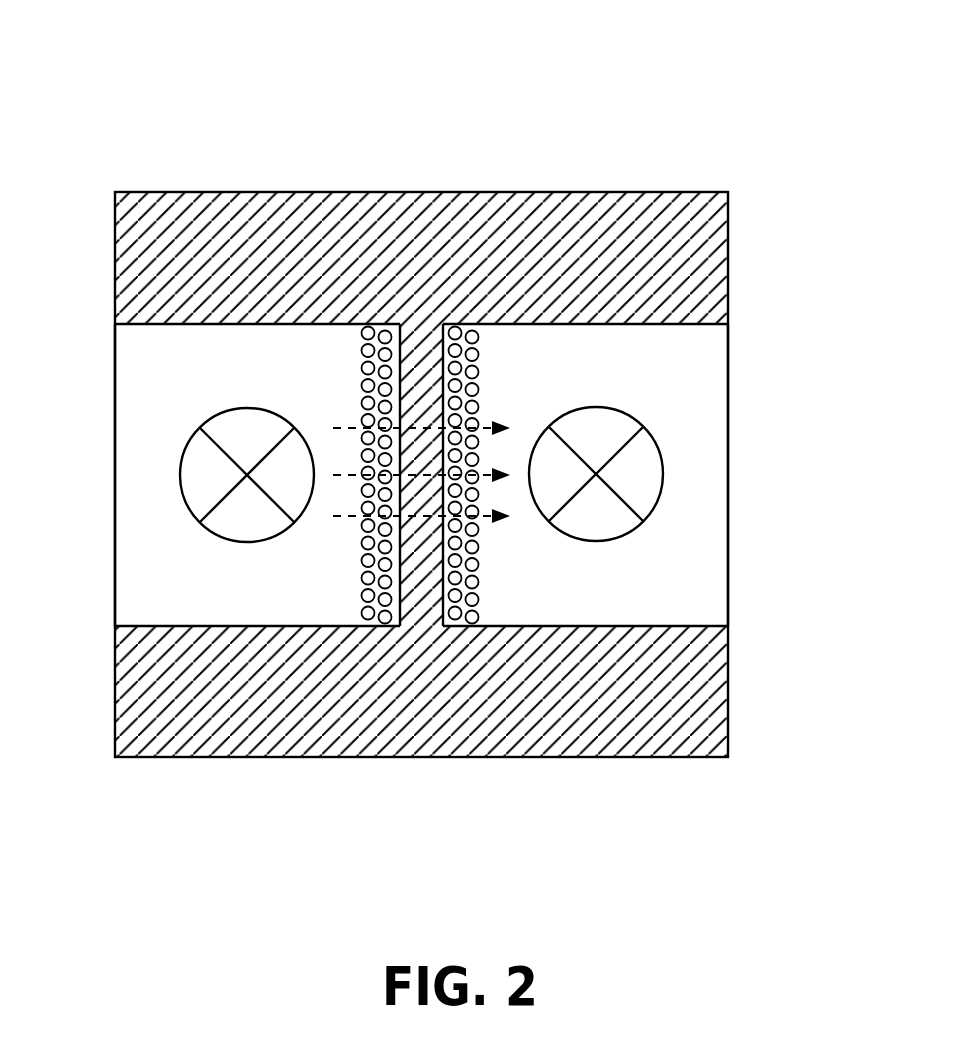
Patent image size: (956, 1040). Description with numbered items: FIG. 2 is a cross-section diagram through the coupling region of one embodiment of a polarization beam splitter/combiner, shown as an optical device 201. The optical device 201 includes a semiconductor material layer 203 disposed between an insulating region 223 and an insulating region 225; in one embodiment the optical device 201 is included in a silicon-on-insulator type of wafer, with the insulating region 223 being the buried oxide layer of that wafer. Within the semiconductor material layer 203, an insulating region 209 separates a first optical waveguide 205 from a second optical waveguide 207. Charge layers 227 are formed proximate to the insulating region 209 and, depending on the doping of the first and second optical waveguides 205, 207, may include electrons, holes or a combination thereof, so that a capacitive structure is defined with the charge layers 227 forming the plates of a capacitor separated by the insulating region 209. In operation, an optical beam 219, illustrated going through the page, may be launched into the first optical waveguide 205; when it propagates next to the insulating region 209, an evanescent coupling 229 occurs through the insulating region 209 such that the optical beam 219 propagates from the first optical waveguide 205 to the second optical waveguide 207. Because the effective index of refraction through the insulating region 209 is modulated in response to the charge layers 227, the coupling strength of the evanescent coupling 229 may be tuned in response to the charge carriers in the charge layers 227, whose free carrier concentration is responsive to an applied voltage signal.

The optical device 201 is at (797, 53).
The semiconductor material layer 203 is at (133, 582).
The first optical waveguide 205 is at (195, 358).
The second optical waveguide 207 is at (709, 358).
The insulating region 209 is at (463, 343).
The optical beam 219 is at (180, 475).
The insulating region 223 is at (713, 712).
The insulating region 225 is at (713, 250).
The charge layers 227 is at (366, 603).
The evanescent coupling 229 is at (345, 427).